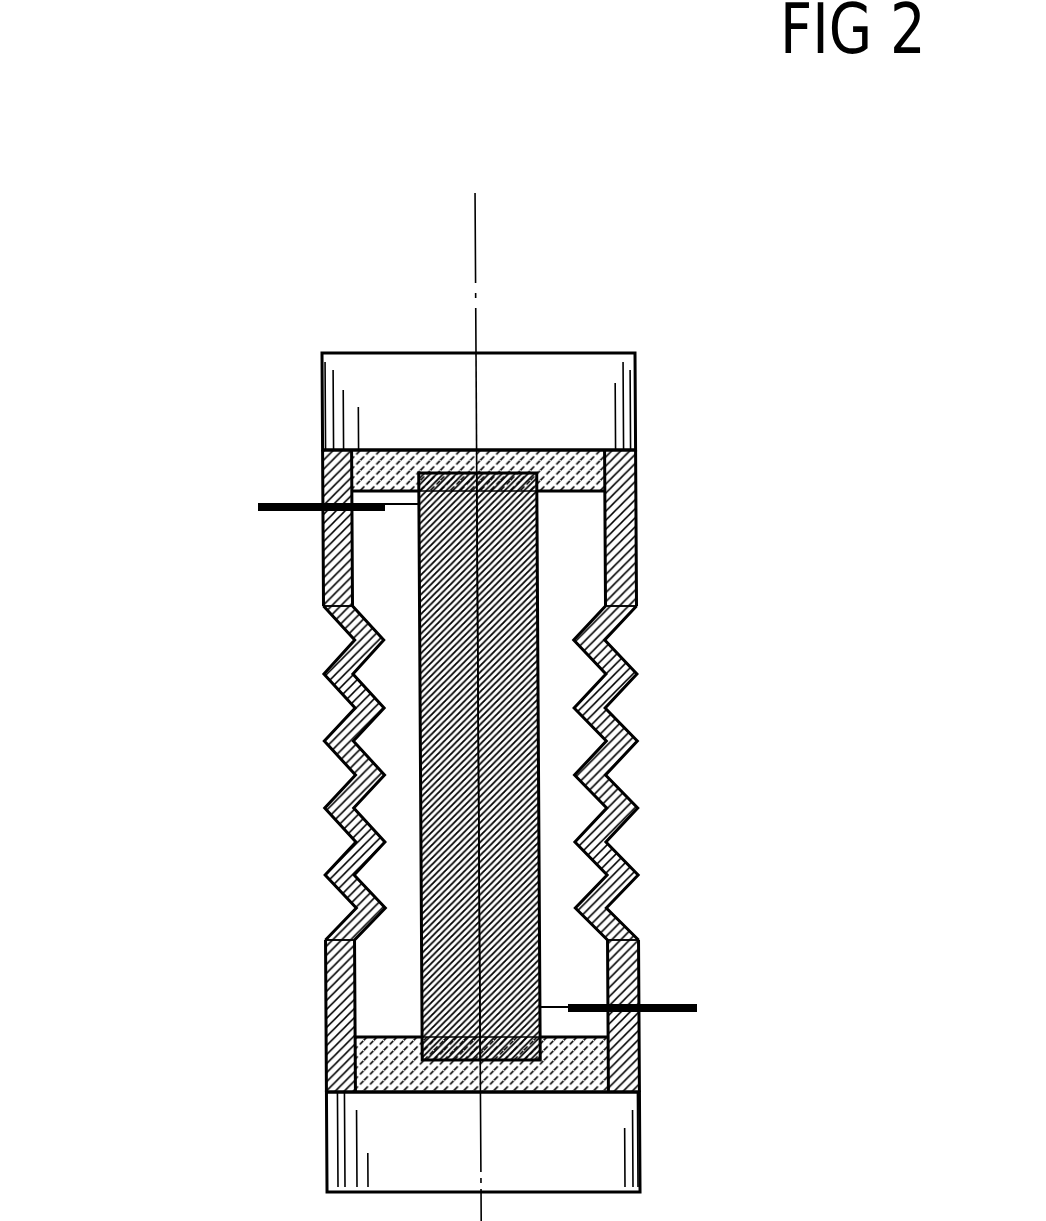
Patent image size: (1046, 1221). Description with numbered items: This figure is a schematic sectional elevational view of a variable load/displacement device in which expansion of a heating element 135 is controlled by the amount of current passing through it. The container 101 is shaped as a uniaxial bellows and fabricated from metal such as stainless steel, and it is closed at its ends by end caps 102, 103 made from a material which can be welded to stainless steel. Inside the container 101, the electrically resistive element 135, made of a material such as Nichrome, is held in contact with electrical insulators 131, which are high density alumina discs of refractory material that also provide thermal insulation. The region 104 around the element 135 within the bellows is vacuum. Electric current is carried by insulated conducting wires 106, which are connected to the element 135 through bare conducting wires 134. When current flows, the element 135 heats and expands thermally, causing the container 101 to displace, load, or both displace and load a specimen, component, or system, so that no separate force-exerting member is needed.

The container 101 is at (606, 771).
The end cap 102 is at (402, 1143).
The end cap 103 is at (393, 387).
The region 104 is at (567, 675).
The insulated conducting wires 106 is at (320, 504).
The electrical insulation 131 is at (580, 463).
The bare conducting wires 134 is at (418, 503).
The heating element 135 is at (540, 767).